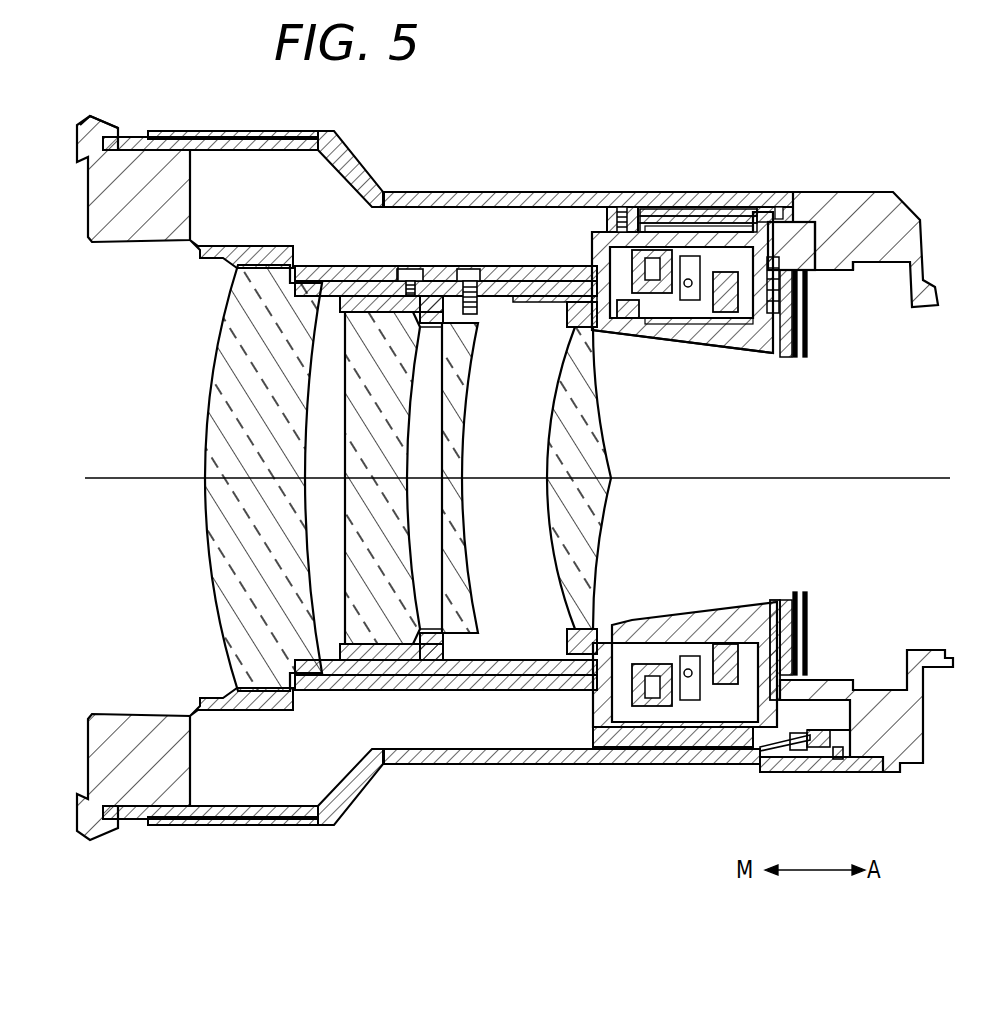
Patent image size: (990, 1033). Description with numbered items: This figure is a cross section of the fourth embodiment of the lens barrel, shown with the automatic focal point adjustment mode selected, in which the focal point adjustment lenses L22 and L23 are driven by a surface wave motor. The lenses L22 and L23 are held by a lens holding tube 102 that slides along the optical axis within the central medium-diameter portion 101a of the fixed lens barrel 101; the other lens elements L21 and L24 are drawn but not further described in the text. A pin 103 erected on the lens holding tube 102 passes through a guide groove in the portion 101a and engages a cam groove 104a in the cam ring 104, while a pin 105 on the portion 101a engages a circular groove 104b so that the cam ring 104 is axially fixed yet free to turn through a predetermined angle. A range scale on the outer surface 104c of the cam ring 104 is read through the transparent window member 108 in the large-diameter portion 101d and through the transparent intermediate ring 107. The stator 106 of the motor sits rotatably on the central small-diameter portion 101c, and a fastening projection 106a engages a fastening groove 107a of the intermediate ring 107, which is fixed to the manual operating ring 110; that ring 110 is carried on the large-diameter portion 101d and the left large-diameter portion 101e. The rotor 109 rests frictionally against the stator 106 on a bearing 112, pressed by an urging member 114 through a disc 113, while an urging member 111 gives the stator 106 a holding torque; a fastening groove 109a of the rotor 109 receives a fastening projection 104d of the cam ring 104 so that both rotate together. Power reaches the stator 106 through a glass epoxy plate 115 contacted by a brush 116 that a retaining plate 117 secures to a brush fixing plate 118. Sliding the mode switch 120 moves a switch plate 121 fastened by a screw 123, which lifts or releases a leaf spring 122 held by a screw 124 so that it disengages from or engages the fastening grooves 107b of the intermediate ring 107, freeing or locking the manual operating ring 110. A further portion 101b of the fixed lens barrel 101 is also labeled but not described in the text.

The fixed lens barrel 101 is at (157, 242).
The central medium-diameter portion 101a is at (547, 302).
The lens holding portion 101b is at (600, 330).
The central small-diameter portion 101c is at (745, 340).
The large-diameter portion 101d is at (885, 193).
The left large-diameter portion 101e is at (100, 128).
The lens holding tube 102 is at (490, 315).
The pin 103 is at (490, 268).
The cam ring 104 is at (357, 262).
The cam groove 104a is at (468, 268).
The circular groove 104b is at (390, 268).
The outer surface of the large-diameter portion 104c is at (762, 207).
The fastening projection 104d is at (594, 243).
The pin 105 is at (412, 268).
The stator 106 is at (707, 335).
The fastening projection 106a is at (772, 224).
The intermediate ring 107 is at (640, 210).
The fastening groove 107a is at (780, 218).
The fastening grooves 107b is at (765, 752).
The window member 108 is at (742, 210).
The rotor 109 is at (688, 210).
The fastening groove 109a is at (653, 210).
The manual operating ring 110 is at (350, 141).
The urging member 111 is at (695, 325).
The bearing 112 is at (710, 213).
The disc 113 is at (645, 320).
The urging member 114 is at (660, 207).
The glass epoxy plate 115 is at (790, 356).
The brush 116 is at (858, 262).
The retaining plate 117 is at (782, 285).
The brush fixing plate 118 is at (809, 305).
The mode switch 120 is at (790, 775).
The switch plate 121 is at (805, 718).
The leaf spring 122 is at (795, 755).
The screw 123 is at (822, 775).
The screw 124 is at (840, 774).
The first lens element L21 is at (215, 535).
The focal point adjustment lens L22 is at (357, 553).
The focal point adjustment lens L23 is at (460, 545).
The fourth lens element L24 is at (600, 548).